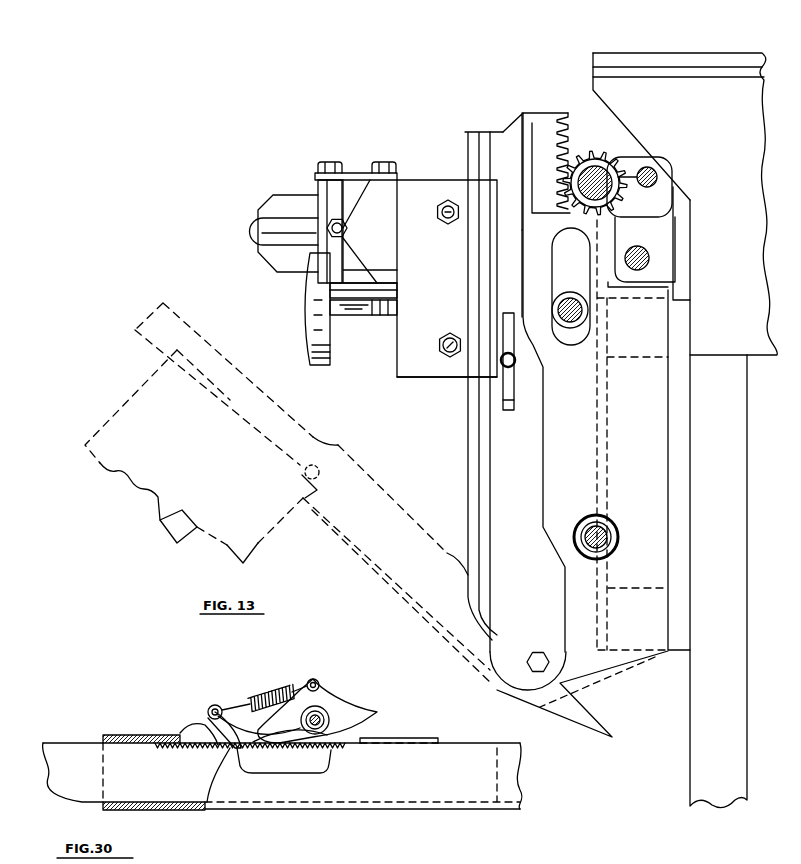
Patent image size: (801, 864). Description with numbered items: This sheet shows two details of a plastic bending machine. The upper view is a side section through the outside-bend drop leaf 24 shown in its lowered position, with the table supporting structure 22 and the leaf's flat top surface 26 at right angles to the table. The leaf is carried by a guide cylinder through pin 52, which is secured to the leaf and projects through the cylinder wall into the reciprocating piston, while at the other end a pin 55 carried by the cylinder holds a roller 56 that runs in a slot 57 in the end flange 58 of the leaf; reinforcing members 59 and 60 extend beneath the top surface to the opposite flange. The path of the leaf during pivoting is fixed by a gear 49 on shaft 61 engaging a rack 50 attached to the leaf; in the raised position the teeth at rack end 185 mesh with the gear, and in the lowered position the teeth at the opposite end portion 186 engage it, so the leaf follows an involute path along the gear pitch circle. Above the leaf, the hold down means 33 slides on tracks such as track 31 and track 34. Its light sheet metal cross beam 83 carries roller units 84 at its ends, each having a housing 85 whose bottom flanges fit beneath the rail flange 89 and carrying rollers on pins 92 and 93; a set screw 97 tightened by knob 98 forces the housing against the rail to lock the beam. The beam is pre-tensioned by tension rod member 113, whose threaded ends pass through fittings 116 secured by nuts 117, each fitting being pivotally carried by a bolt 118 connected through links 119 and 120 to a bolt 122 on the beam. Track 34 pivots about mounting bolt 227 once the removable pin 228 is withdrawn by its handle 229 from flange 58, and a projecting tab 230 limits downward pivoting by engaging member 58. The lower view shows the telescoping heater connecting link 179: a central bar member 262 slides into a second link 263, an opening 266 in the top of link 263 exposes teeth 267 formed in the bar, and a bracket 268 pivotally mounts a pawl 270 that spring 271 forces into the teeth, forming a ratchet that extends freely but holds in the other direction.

In FIG. 13, the supporting structure 22 is at (698, 703).
In FIG. 13, the drop leaf 24 is at (460, 422).
In FIG. 13, the flat top surface 26 is at (595, 430).
In FIG. 13, the track 31 is at (747, 52).
In FIG. 30, the track 31 is at (500, 863).
In FIG. 13, the hold down means 33 is at (100, 457).
In FIG. 13, the track 34 is at (140, 333).
In FIG. 30, the track 34 is at (322, 863).
In FIG. 13, the gear 49 is at (580, 173).
In FIG. 13, the rack 50 is at (548, 134).
In FIG. 13, the pin 52 is at (617, 542).
In FIG. 13, the pin 55 is at (582, 310).
In FIG. 13, the roller 56 is at (563, 292).
In FIG. 13, the slot 57 is at (563, 270).
In FIG. 13, the end flange 58 is at (613, 415).
In FIG. 13, the reinforcing member 59 is at (645, 592).
In FIG. 13, the reinforcing member 60 is at (632, 357).
In FIG. 13, the shaft 61 is at (605, 172).
In FIG. 13, the cross beam 83 is at (352, 192).
In FIG. 13, the roller unit 84 is at (387, 348).
In FIG. 13, the housing 85 is at (422, 368).
In FIG. 13, the rail flange 89 is at (471, 131).
In FIG. 13, the pin 92 is at (455, 335).
In FIG. 13, the pin 93 is at (460, 213).
In FIG. 13, the set screw 97 is at (360, 318).
In FIG. 13, the knob 98 is at (310, 328).
In FIG. 13, the tension rod member 113 is at (263, 218).
In FIG. 13, the fitting 116 is at (328, 197).
In FIG. 13, the threaded nut 117 is at (327, 235).
In FIG. 13, the bolt 118 is at (330, 162).
In FIG. 13, the link 119 is at (372, 255).
In FIG. 13, the link 120 is at (357, 173).
In FIG. 13, the bolt 122 is at (383, 162).
In FIG. 30, the connecting link 179 is at (288, 817).
In FIG. 13, the rack end 185 is at (551, 155).
In FIG. 13, the opposite end portion of rack 186 is at (548, 203).
In FIG. 13, the mounting bolt 227 is at (537, 660).
In FIG. 13, the removable pin 228 is at (513, 358).
In FIG. 13, the handle 229 is at (513, 400).
In FIG. 13, the projecting tab 230 is at (613, 675).
In FIG. 30, the central bar member 262 is at (82, 772).
In FIG. 30, the second link 263 is at (458, 757).
In FIG. 30, the opening 266 is at (345, 737).
In FIG. 30, the teeth 267 is at (192, 737).
In FIG. 30, the bracket 268 is at (220, 740).
In FIG. 30, the pawl 270 is at (315, 697).
In FIG. 30, the spring 271 is at (270, 688).